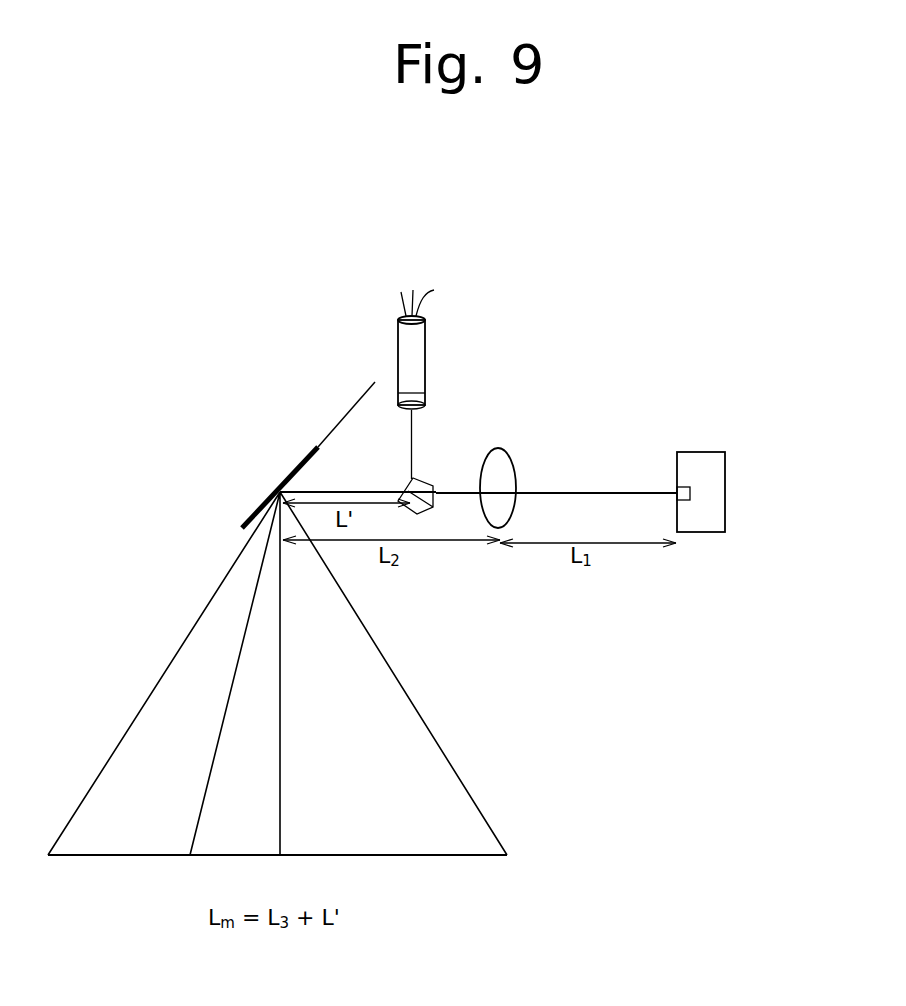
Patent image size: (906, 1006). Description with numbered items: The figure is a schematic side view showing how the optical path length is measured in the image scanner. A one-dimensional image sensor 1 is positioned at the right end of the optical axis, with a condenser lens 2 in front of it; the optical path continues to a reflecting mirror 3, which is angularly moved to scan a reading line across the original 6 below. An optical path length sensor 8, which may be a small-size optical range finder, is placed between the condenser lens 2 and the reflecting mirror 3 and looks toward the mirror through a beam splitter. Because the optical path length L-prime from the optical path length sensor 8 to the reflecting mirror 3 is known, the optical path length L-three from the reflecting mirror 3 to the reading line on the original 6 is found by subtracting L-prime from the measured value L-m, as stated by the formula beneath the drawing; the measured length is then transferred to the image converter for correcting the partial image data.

The one-dimensional image sensor 1 is at (725, 468).
The condenser lens 2 is at (512, 470).
The reflecting mirror 3 is at (262, 505).
The original 6 is at (465, 855).
The optical path length sensor 8 is at (420, 357).